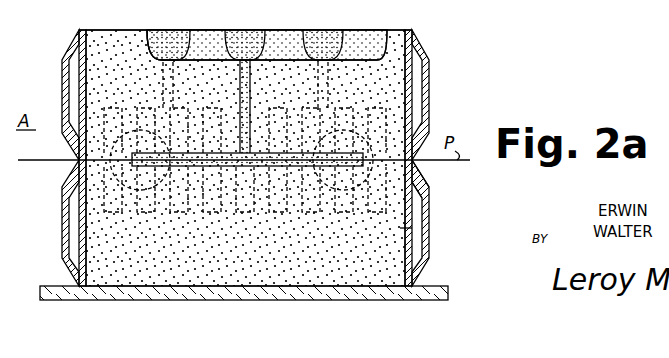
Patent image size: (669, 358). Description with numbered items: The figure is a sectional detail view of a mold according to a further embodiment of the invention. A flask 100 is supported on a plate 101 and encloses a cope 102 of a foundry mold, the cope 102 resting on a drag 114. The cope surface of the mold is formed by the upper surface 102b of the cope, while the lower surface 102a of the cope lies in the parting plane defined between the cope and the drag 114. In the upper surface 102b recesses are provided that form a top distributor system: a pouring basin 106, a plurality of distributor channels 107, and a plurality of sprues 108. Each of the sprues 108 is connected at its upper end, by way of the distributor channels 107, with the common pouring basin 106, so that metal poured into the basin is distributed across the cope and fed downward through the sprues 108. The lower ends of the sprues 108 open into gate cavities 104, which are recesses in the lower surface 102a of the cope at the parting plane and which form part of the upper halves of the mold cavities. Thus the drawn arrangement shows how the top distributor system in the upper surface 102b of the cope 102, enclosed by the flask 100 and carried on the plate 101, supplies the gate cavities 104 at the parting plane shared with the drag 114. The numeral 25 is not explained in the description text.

The cope 102 is at (121, 40).
The distributor channels 107 is at (216, 26).
The sprues 108 is at (241, 58).
The top cover layer 25 is at (285, 46).
The pouring basin 106 is at (355, 46).
The upper surface of the cope 102b is at (403, 33).
The flask 100 is at (428, 101).
The lower surface of the cope 102a is at (418, 168).
The drag 114 is at (400, 228).
The plate 101 is at (428, 288).
The gate cavities 104 is at (80, 162).